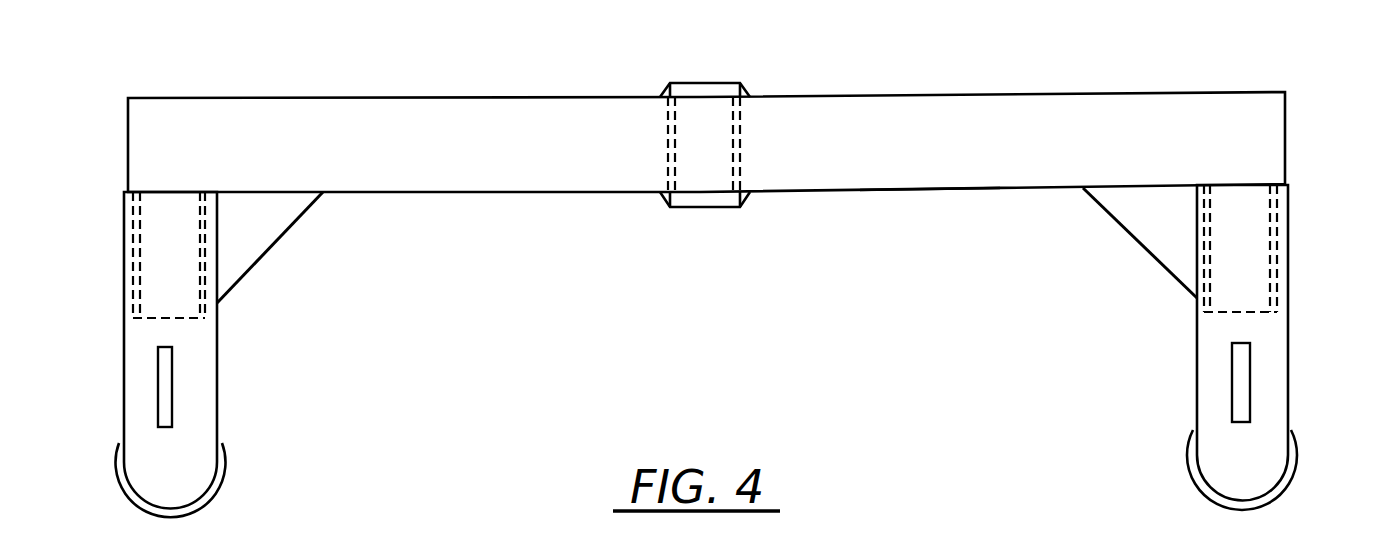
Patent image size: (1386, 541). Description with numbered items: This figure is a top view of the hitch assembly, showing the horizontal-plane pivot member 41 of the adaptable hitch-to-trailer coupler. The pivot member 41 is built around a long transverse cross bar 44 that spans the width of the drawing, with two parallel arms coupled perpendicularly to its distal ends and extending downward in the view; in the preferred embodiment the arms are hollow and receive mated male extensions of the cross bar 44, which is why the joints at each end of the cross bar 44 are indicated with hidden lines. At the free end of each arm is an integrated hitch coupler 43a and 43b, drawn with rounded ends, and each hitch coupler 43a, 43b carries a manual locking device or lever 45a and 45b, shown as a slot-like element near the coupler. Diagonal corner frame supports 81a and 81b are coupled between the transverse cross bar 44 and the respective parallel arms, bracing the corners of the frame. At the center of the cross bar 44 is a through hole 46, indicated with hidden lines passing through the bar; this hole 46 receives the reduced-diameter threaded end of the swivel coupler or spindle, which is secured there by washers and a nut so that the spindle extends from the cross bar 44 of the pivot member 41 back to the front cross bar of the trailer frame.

The horizontal-plane pivot member 41 is at (1127, 89).
The transverse cross bar 44 is at (922, 165).
The through hole 46 is at (717, 130).
The hitch coupler 43a is at (195, 473).
The hitch coupler 43b is at (1222, 465).
The manual locking device or lever 45a is at (162, 418).
The manual locking device or lever 45b is at (1240, 408).
The corner frame support 81a is at (252, 230).
The corner frame support 81b is at (1148, 233).